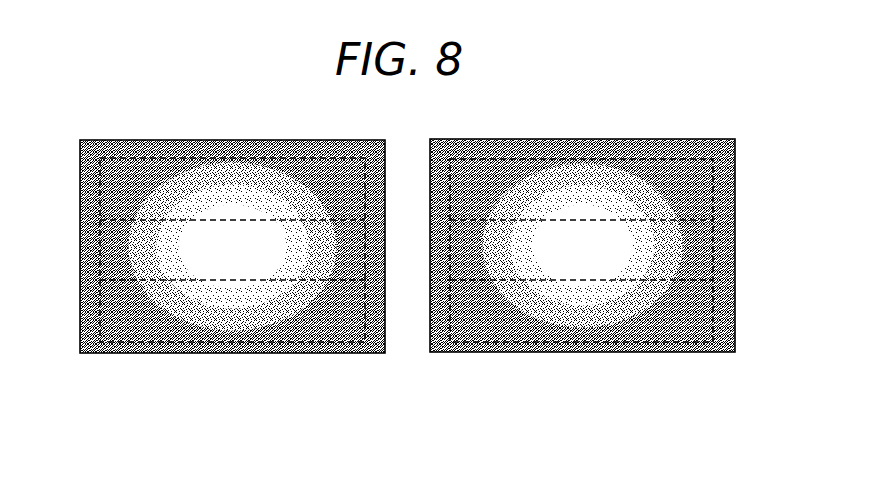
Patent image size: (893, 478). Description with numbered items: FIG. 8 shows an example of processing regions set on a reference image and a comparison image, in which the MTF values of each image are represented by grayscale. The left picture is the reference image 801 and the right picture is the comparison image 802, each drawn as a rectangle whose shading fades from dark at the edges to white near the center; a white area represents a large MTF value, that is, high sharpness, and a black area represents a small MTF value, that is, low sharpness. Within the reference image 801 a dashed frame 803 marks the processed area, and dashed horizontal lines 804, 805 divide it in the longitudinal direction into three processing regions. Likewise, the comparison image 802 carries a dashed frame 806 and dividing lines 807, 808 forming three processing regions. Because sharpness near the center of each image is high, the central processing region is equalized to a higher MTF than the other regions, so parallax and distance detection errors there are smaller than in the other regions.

The first captured image 801 is at (281, 139).
The second captured image 802 is at (631, 138).
The effective image region of first image 803 is at (143, 139).
The upper boundary line of evaluation region 804 is at (78, 248).
The lower boundary line of evaluation region 805 is at (78, 311).
The effective image region of second image 806 is at (493, 138).
The upper boundary line of evaluation region 807 is at (737, 243).
The lower boundary line of evaluation region 808 is at (737, 311).